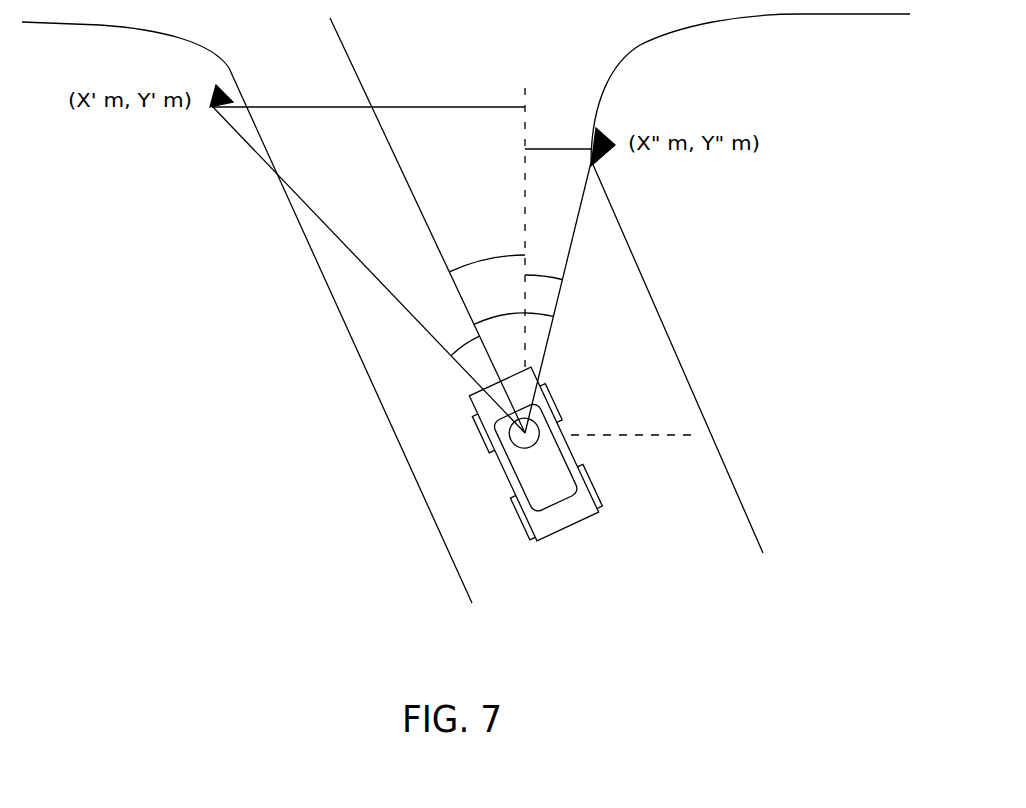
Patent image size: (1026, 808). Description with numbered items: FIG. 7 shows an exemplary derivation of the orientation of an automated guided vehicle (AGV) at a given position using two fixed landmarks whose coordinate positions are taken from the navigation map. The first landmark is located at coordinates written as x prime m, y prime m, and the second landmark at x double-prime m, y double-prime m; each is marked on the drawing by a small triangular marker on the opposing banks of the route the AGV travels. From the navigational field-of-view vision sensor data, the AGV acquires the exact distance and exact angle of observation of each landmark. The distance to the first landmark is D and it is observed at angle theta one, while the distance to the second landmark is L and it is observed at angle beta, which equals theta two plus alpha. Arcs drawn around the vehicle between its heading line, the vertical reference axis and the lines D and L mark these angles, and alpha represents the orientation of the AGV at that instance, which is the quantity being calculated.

The exact distance of landmark 1 with respect to the AGV D is at (368, 269).
The exact distance of landmark 2 with respect to the AGV L is at (559, 291).